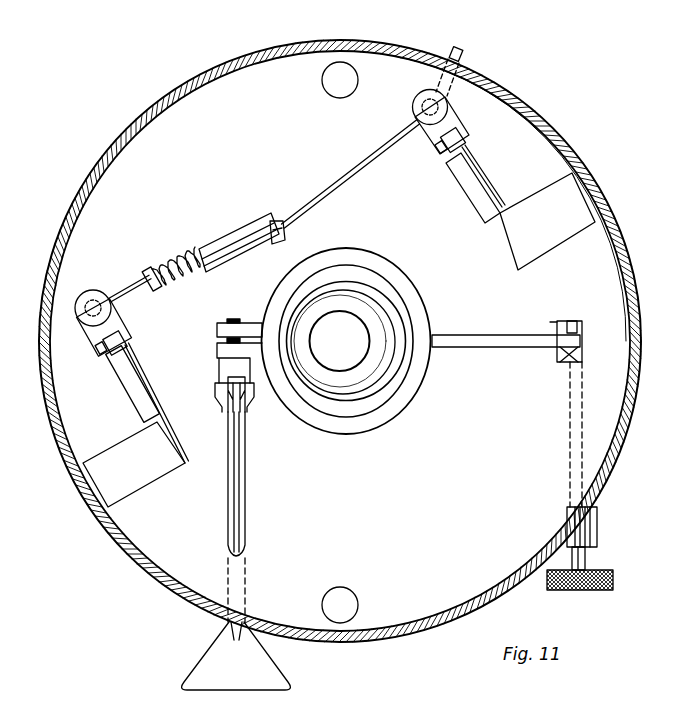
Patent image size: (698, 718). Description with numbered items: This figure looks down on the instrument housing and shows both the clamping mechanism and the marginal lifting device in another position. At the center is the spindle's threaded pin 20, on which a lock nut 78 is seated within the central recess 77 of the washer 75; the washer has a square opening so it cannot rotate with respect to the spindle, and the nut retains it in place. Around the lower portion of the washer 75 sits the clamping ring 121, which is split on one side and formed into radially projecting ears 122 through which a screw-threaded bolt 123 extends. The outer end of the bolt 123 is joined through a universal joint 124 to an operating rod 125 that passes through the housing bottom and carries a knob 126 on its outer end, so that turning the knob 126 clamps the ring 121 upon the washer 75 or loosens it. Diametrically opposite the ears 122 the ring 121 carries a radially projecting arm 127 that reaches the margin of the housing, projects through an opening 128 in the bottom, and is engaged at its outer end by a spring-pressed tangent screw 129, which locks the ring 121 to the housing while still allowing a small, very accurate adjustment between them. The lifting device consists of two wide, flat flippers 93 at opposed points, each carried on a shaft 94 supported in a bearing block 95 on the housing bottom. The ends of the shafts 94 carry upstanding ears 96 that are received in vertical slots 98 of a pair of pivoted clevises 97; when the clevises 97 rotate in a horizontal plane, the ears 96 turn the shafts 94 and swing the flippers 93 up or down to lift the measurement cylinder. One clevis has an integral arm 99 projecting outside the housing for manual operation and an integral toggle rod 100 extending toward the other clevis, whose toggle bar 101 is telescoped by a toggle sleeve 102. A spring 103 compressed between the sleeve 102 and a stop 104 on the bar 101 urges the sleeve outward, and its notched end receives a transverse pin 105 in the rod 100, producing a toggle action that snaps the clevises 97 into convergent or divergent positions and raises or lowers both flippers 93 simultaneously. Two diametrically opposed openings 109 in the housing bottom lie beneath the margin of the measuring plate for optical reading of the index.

The screw-threaded pin 20 is at (340, 330).
The washer 75 is at (312, 405).
The central recess 77 is at (380, 378).
The lock nut 78 is at (378, 352).
The flippers 93 is at (540, 240).
The shafts 94 is at (492, 218).
The bearing blocks 95 is at (470, 173).
The ears 96 is at (460, 135).
The clevises 97 is at (413, 100).
The vertical slots 98 is at (445, 147).
The arm 99 is at (468, 55).
The toggle rod 100 is at (355, 162).
The toggle bar 101 is at (115, 294).
The toggle sleeve 102 is at (230, 238).
The spring 103 is at (183, 262).
The stop 104 is at (148, 272).
The transverse pin 105 is at (276, 222).
The openings 109 is at (343, 62).
The clamping ring 121 is at (368, 432).
The ears 122 is at (222, 325).
The screw-threaded bolt 123 is at (250, 296).
The universal joint 124 is at (245, 395).
The operating rod 125 is at (240, 512).
The knob 126 is at (205, 660).
The radially projecting arm 127 is at (525, 345).
The opening 128 is at (580, 350).
The tangent screw 129 is at (597, 535).